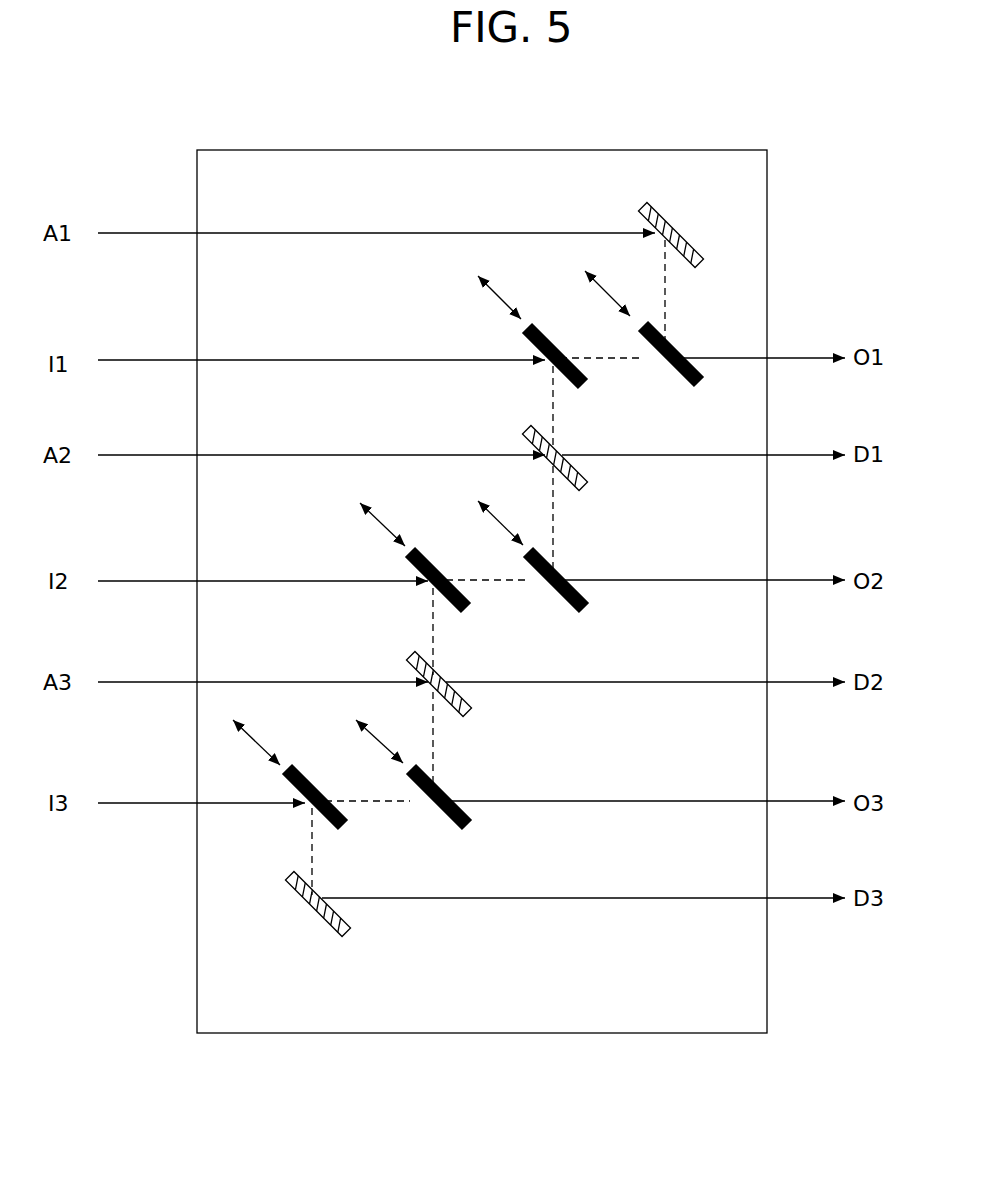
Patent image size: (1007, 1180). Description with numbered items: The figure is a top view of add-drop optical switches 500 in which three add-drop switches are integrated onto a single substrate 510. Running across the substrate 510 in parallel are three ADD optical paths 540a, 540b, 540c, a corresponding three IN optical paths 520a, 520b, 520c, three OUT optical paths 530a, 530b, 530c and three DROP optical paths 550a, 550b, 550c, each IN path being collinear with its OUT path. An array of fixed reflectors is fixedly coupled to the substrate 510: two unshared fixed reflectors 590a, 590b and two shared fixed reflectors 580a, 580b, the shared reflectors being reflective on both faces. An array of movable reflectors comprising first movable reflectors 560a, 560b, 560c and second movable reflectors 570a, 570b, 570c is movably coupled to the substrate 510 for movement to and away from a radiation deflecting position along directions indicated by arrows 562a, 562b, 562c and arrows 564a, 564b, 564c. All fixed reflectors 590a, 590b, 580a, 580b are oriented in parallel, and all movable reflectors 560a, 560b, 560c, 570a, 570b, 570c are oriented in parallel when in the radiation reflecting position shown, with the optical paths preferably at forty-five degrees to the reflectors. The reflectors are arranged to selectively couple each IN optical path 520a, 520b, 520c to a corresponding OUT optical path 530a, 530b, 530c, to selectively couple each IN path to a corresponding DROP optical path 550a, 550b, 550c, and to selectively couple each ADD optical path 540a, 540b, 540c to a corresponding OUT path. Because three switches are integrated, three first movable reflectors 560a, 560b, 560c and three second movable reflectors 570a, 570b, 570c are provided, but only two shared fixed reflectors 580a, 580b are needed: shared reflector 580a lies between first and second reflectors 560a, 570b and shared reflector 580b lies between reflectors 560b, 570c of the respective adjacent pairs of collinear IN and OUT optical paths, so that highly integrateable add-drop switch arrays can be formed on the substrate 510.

The add-drop optical switches 500 is at (762, 120).
The substrate 510 is at (257, 149).
The IN optical path 520a is at (283, 359).
The IN optical path 520b is at (307, 579).
The IN optical path 520c is at (158, 806).
The OUT optical path 530a is at (798, 356).
The OUT optical path 530b is at (673, 578).
The OUT optical path 530c is at (582, 800).
The ADD optical path 540a is at (347, 232).
The ADD optical path 540b is at (308, 454).
The ADD optical path 540c is at (285, 680).
The DROP optical path 550a is at (812, 453).
The DROP optical path 550b is at (636, 681).
The DROP optical path 550c is at (557, 900).
The first movable reflector 560a is at (583, 376).
The first movable reflector 560b is at (465, 605).
The first movable reflector 560c is at (343, 825).
The arrow 562a is at (484, 284).
The arrow 562b is at (380, 514).
The arrow 562c is at (255, 740).
The arrow 564a is at (600, 288).
The arrow 564b is at (495, 516).
The arrow 564c is at (374, 738).
The second movable reflector 570a is at (675, 348).
The second movable reflector 570b is at (560, 574).
The second movable reflector 570c is at (466, 825).
The shared fixed reflector 580a is at (573, 468).
The shared fixed reflector 580b is at (462, 712).
The unshared fixed reflector 590a is at (668, 223).
The unshared fixed reflector 590b is at (310, 908).